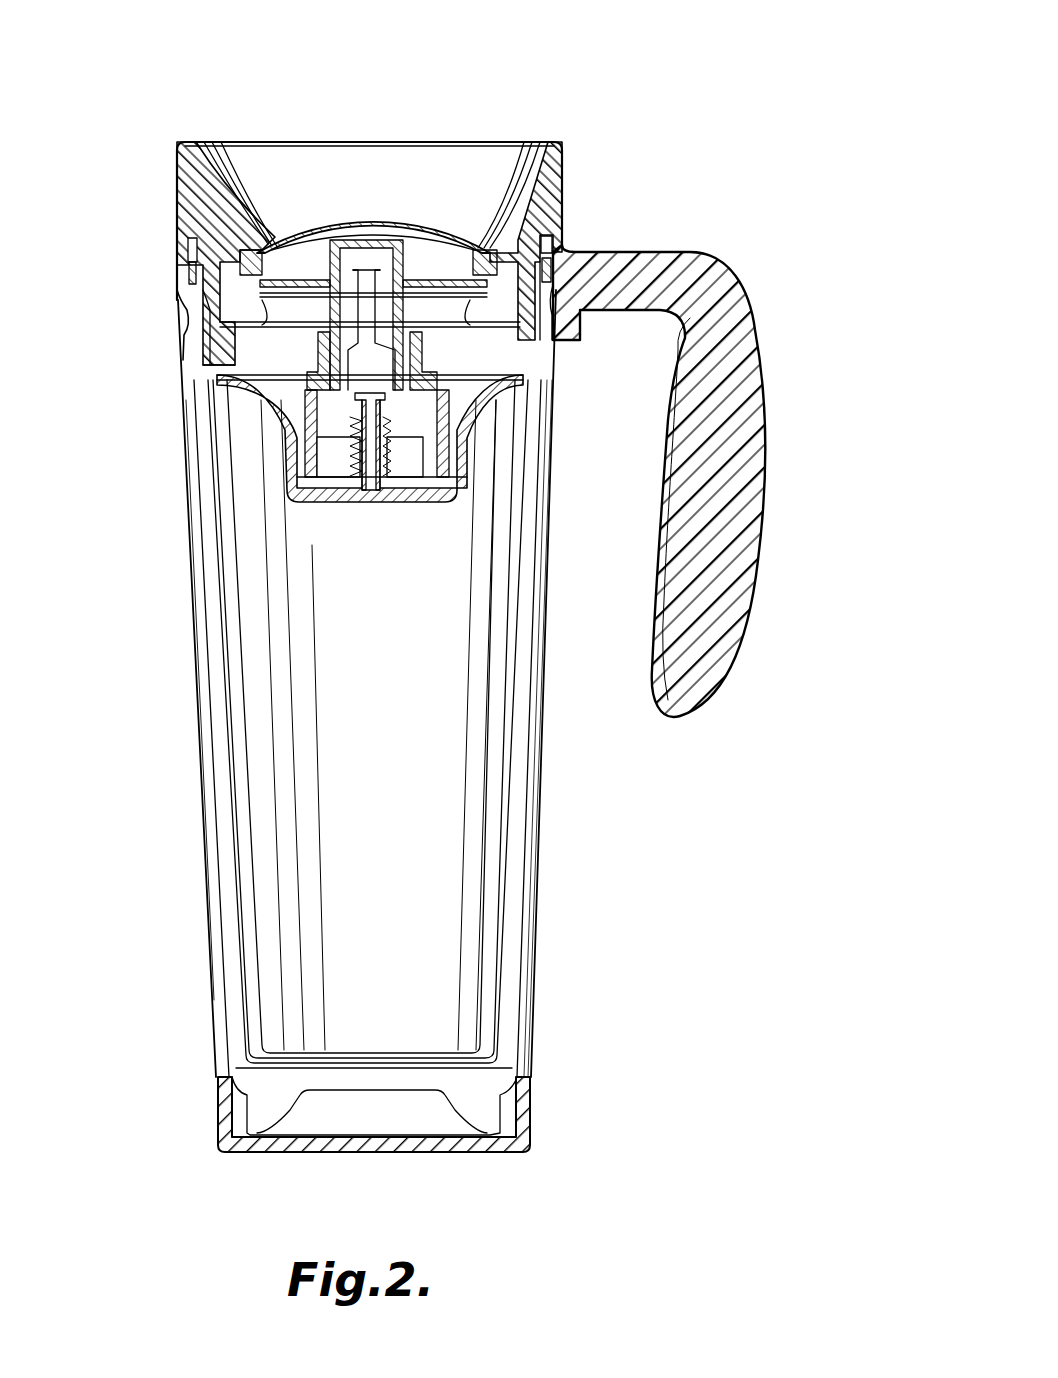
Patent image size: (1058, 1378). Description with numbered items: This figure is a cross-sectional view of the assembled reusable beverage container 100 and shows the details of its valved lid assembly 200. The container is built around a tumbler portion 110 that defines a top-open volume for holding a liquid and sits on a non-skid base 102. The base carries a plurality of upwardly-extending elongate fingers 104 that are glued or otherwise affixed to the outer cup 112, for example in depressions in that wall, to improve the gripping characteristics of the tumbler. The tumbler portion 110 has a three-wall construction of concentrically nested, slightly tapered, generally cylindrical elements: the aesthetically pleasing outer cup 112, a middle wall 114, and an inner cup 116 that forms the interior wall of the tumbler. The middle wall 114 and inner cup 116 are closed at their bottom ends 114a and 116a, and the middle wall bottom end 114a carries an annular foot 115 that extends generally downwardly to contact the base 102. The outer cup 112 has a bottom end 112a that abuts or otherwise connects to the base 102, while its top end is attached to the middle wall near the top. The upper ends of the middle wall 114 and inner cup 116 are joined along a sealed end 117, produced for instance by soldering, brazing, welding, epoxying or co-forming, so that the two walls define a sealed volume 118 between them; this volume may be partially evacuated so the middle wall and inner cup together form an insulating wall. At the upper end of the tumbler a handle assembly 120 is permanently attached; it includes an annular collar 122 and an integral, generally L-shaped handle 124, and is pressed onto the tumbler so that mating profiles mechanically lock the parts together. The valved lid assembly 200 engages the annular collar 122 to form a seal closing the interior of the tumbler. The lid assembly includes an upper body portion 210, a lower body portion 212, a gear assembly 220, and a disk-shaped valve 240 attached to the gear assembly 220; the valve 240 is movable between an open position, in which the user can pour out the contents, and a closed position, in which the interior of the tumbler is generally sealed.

The reusable beverage container 100 is at (613, 71).
The non-skid base 102 is at (540, 1144).
The elongate fingers 104 is at (545, 930).
The tumbler portion 110 is at (550, 669).
The outer cup 112 is at (549, 497).
The bottom end of outer cup 112a is at (210, 1032).
The middle wall 114 is at (541, 557).
The bottom end of middle wall 114a is at (392, 1092).
The annular foot 115 is at (247, 1128).
The inner cup 116 is at (523, 612).
The bottom end of inner cup 116a is at (467, 1072).
The sealed end 117 is at (190, 268).
The sealed volume 118 is at (208, 555).
The handle assembly 120 is at (716, 268).
The annular collar 122 is at (183, 305).
The L-shaped handle 124 is at (752, 455).
The valved lid assembly 200 is at (334, 137).
The upper body portion 210 is at (557, 184).
The lower body portion 212 is at (329, 311).
The gear assembly 220 is at (276, 432).
The disk-shaped valve 240 is at (400, 220).